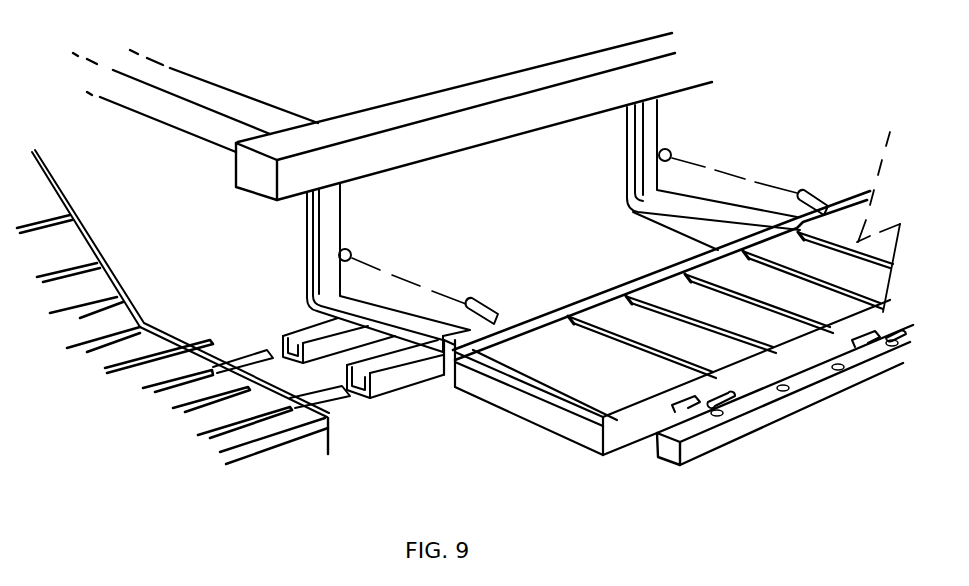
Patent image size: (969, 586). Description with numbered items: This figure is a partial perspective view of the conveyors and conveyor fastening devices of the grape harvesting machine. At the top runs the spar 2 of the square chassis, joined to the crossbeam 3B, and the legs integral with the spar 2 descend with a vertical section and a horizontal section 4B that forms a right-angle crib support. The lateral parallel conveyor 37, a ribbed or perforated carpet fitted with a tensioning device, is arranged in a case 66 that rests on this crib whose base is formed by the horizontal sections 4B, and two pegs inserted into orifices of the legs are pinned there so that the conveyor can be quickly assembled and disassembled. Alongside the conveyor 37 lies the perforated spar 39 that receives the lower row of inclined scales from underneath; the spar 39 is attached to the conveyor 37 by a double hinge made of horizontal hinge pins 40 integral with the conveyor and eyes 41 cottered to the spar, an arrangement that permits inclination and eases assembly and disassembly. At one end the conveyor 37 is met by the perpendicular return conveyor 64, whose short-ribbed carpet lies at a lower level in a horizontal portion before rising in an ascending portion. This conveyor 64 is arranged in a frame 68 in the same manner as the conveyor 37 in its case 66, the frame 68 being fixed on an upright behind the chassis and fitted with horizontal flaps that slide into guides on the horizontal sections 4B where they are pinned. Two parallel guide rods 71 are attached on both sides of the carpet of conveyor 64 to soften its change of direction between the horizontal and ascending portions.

The spar 2 is at (474, 116).
The crossbeam 3B is at (150, 92).
The horizontal section of leg 4B is at (360, 308).
The lateral parallel conveyor 37 is at (661, 278).
The spar 39 is at (748, 425).
The horizontal hinge pin 40 is at (688, 400).
The eye 41 is at (882, 310).
The return conveyor 64 is at (154, 326).
The case 66 is at (582, 445).
The frame 68 is at (285, 442).
The guide rod 71 is at (131, 270).